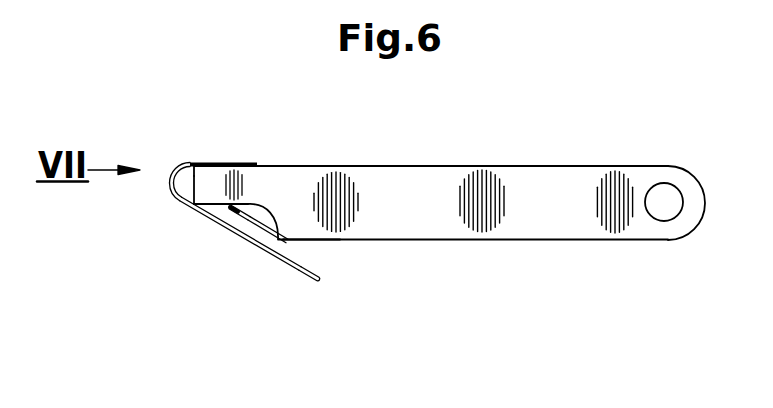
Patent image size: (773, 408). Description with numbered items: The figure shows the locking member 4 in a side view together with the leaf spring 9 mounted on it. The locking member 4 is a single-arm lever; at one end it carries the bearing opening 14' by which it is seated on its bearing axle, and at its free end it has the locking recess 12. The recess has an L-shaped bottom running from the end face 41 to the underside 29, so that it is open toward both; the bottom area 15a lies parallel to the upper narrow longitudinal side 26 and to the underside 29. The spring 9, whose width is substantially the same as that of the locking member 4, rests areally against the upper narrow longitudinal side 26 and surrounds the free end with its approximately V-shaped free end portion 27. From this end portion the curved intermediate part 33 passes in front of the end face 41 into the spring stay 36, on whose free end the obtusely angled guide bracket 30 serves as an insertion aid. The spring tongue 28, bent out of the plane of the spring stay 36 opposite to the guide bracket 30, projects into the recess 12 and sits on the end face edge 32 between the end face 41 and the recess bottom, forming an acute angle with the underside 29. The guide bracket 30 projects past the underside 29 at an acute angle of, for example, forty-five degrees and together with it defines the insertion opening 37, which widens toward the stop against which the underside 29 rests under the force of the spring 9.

The locking member 4 is at (613, 166).
The spring 9 is at (241, 162).
The locking recess 12 is at (210, 218).
The bearing opening 14' is at (688, 184).
The bottom area 15a is at (238, 203).
The upper narrow longitudinal side 26 is at (467, 166).
The free end portion 27 is at (281, 253).
The spring tongue 28 is at (238, 230).
The underside 29 is at (522, 242).
The guide bracket 30 is at (309, 279).
The end face edge 32 is at (193, 186).
The curved intermediate part 33 is at (176, 167).
The spring stay 36 is at (200, 213).
The insertion opening 37 is at (328, 252).
The end face 41 is at (193, 176).